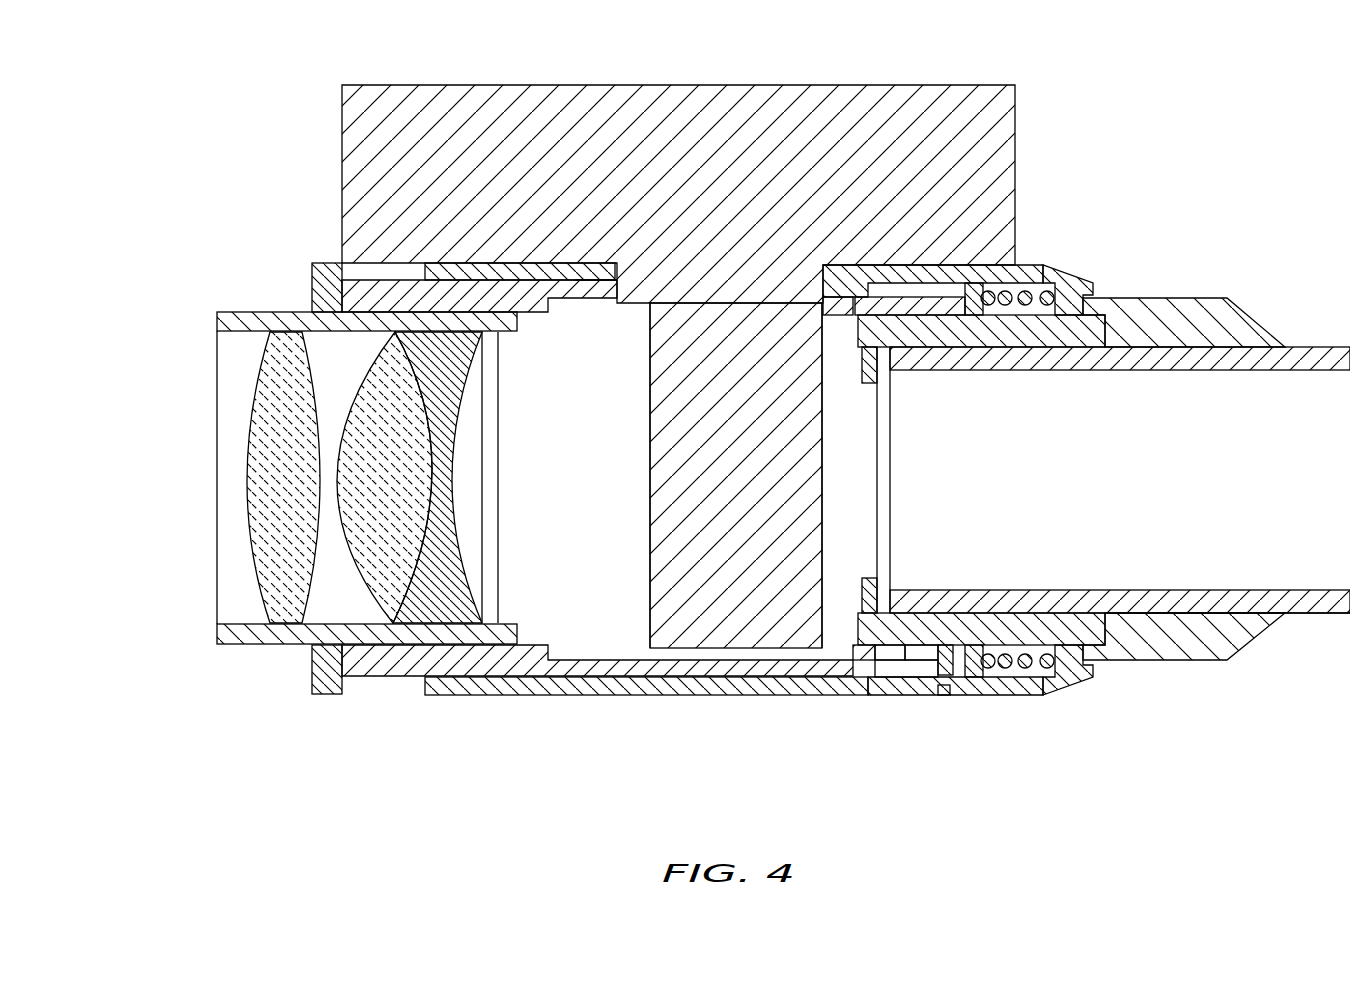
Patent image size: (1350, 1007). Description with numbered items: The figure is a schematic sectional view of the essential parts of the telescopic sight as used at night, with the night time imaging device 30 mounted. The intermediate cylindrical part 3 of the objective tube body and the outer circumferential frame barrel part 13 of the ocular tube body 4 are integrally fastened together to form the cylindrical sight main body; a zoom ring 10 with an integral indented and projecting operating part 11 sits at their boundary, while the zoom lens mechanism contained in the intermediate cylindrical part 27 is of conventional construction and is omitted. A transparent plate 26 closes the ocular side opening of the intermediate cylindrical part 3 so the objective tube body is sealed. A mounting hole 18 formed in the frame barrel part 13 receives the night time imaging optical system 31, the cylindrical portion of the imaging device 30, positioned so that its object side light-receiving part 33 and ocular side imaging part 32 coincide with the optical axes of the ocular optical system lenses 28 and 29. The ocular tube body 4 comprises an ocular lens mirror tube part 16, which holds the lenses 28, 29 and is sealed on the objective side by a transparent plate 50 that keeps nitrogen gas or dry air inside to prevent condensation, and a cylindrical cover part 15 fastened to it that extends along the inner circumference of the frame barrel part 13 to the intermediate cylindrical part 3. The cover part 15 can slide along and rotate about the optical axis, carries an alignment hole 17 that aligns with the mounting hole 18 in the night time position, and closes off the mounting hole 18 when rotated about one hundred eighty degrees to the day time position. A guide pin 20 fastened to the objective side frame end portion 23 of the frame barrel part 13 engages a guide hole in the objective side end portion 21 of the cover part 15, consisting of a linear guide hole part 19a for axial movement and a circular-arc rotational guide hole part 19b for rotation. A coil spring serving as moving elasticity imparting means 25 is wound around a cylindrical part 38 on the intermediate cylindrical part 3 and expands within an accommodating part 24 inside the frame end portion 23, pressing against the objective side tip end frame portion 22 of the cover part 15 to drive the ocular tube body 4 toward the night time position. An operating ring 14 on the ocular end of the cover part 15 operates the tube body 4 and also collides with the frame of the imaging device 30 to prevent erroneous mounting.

The intermediate cylindrical part 3 is at (1332, 615).
The ocular tube body 4 is at (247, 292).
The zoom ring 10 is at (1250, 347).
The operating part 11 is at (1180, 298).
The outer circumferential frame barrel part 13 is at (495, 696).
The operating ring 14 is at (322, 695).
The cylindrical cover part 15 is at (650, 670).
The ocular lens mirror tube part 16 is at (228, 647).
The alignment hole 17 is at (600, 283).
The mounting hole 18 is at (603, 280).
The linear guide hole part 19a is at (925, 680).
The rotational guide hole part 19b is at (893, 680).
The guide pin 20 is at (953, 680).
The objective side end portion 21 is at (915, 300).
The objective side tip end frame portion 22 is at (975, 300).
The objective side frame end portion 23 is at (1042, 268).
The accommodating part 24 is at (1000, 305).
The moving elasticity imparting means 25 is at (1028, 305).
The transparent plate 26 is at (890, 470).
The intermediate cylindrical part 27 is at (1302, 495).
The ocular optical system lens 28 is at (262, 500).
The ocular optical system lens 29 is at (355, 392).
The night time imaging device 30 is at (513, 85).
The night time imaging optical system 31 is at (668, 484).
The ocular optical system side imaging part 32 is at (660, 533).
The object optical system side light-receiving part 33 is at (822, 535).
The cylindrical part 38 is at (886, 272).
The transparent plate 50 is at (500, 590).